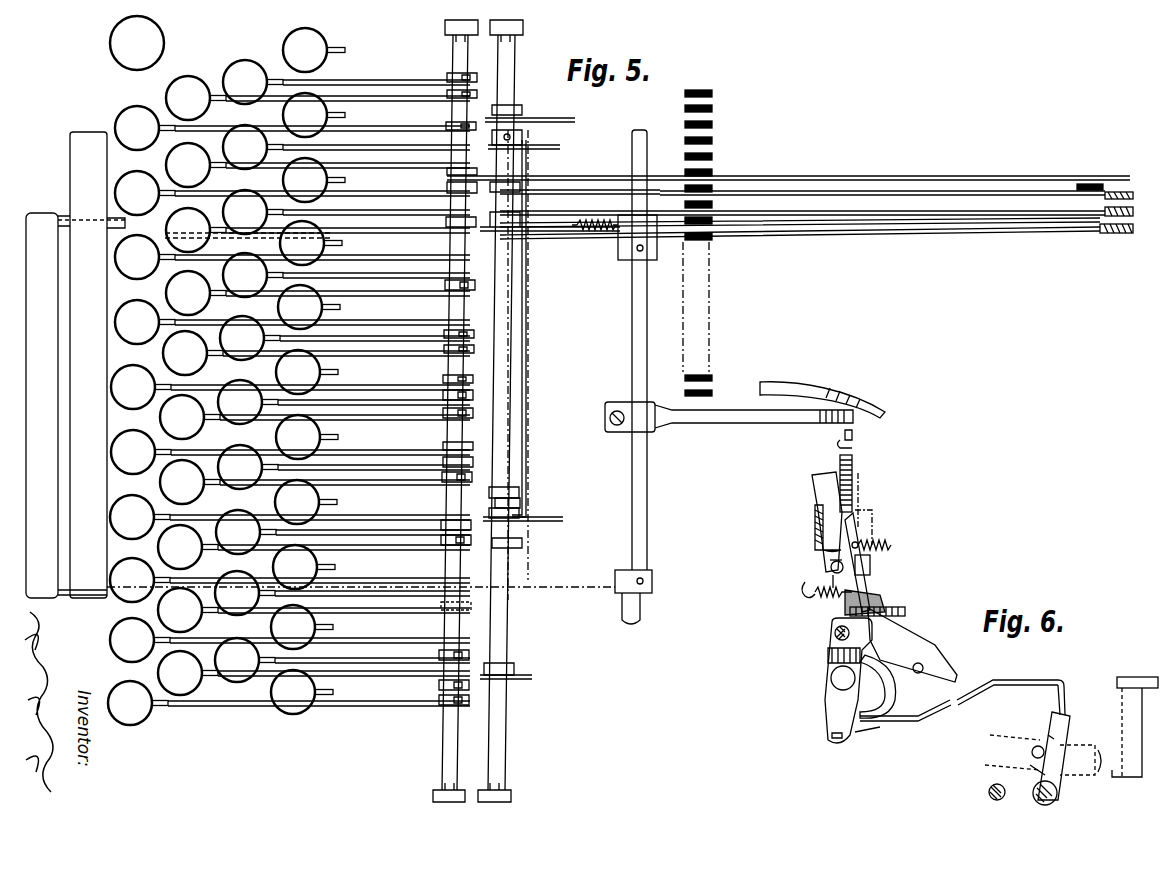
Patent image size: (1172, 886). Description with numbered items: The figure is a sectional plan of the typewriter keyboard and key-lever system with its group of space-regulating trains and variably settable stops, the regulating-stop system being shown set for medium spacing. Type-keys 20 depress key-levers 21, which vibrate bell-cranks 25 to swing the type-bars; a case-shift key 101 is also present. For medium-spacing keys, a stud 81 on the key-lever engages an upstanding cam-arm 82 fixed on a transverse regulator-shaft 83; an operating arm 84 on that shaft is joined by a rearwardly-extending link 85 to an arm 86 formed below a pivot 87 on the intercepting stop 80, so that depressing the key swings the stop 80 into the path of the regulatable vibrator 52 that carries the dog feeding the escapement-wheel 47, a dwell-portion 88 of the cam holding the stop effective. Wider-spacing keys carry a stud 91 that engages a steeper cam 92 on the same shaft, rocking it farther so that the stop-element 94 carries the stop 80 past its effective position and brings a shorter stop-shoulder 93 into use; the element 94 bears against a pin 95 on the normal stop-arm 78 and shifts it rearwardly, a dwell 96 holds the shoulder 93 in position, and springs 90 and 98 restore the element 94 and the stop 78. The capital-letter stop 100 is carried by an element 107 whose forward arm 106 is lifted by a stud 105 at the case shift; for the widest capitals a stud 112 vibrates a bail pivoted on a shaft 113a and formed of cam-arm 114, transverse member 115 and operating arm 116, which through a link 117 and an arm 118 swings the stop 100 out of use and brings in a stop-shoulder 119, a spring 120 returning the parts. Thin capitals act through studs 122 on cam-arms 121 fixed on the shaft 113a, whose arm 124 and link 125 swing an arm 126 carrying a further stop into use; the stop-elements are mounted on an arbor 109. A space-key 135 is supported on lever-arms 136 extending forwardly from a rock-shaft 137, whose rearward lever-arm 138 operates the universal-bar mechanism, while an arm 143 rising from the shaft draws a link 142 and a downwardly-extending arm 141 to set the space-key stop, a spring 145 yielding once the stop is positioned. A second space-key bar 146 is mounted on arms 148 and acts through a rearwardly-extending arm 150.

In FIG. 5, the type-keys 20 is at (283, 52).
In FIG. 6, the type-keys 20 is at (1140, 676).
In FIG. 5, the key-levers 21 is at (384, 140).
In FIG. 6, the key-levers 21 is at (1112, 745).
In FIG. 5, the bell-cranks 25 is at (712, 152).
In FIG. 6, the escapement-wheel 47 is at (854, 462).
In FIG. 6, the regulatable vibrator 52 is at (850, 440).
In FIG. 6, the normal stop-arm 78 is at (815, 527).
In FIG. 6, the intercepting stop 80 is at (838, 475).
In FIG. 5, the stud 81 is at (476, 290).
In FIG. 5, the cam-arm 82 is at (450, 333).
In FIG. 6, the cam-arm 82 is at (1045, 740).
In FIG. 5, the regulator-shaft 83 is at (456, 52).
In FIG. 6, the regulator-shaft 83 is at (1060, 796).
In FIG. 5, the operating arm 84 is at (458, 182).
In FIG. 6, the operating arm 84 is at (1065, 685).
In FIG. 5, the link 85 is at (807, 178).
In FIG. 6, the link 85 is at (1024, 676).
In FIG. 5, the arm 86 is at (1092, 184).
In FIG. 6, the arm 86 is at (879, 686).
In FIG. 6, the pivot 87 is at (854, 636).
In FIG. 6, the dwell-portion 88 is at (1080, 760).
In FIG. 6, the spring 90 is at (892, 540).
In FIG. 5, the stud 91 is at (470, 75).
In FIG. 6, the stud 91 is at (1032, 752).
In FIG. 5, the cam 92 is at (455, 222).
In FIG. 6, the cam 92 is at (1052, 735).
In FIG. 6, the stop-shoulder 93 is at (858, 512).
In FIG. 6, the stop-element 94 is at (835, 560).
In FIG. 6, the pin 95 is at (830, 570).
In FIG. 6, the dwell 96 is at (1035, 772).
In FIG. 6, the spring 98 is at (820, 598).
In FIG. 6, the capital-letter stop 100 is at (873, 563).
In FIG. 5, the case-shift key 101 is at (112, 52).
In FIG. 6, the stud 105 is at (920, 673).
In FIG. 6, the arm 106 is at (942, 655).
In FIG. 6, the element 107 is at (830, 650).
In FIG. 6, the arbor 109 is at (830, 680).
In FIG. 5, the stud 112 is at (520, 140).
In FIG. 5, the shaft 113a is at (510, 379).
In FIG. 6, the shaft 113a is at (988, 790).
In FIG. 5, the cam-arm 114 is at (505, 150).
In FIG. 5, the transverse member 115 is at (527, 332).
In FIG. 5, the operating arm 116 is at (500, 190).
In FIG. 5, the link 117 is at (906, 192).
In FIG. 6, the link 117 is at (878, 730).
In FIG. 5, the arm 118 is at (1133, 194).
In FIG. 6, the arm 118 is at (848, 680).
In FIG. 6, the stop-shoulder 119 is at (882, 600).
In FIG. 6, the spring 120 is at (905, 612).
In FIG. 5, the cam-arms 121 is at (512, 112).
In FIG. 5, the studs 122 is at (523, 112).
In FIG. 5, the arm 124 is at (502, 228).
In FIG. 5, the link 125 is at (865, 222).
In FIG. 5, the arm 126 is at (1133, 213).
In FIG. 5, the space-key 135 is at (88, 365).
In FIG. 5, the lever-arms 136 is at (398, 240).
In FIG. 5, the rock-shaft 137 is at (647, 490).
In FIG. 5, the lever-arm 138 is at (718, 416).
In FIG. 5, the arm 141 is at (1133, 232).
In FIG. 5, the link 142 is at (790, 232).
In FIG. 5, the arm 143 is at (618, 250).
In FIG. 5, the spring 145 is at (583, 224).
In FIG. 5, the second space-key bar 146 is at (96, 598).
In FIG. 5, the arms 148 is at (62, 215).
In FIG. 5, the arm 150 is at (880, 405).